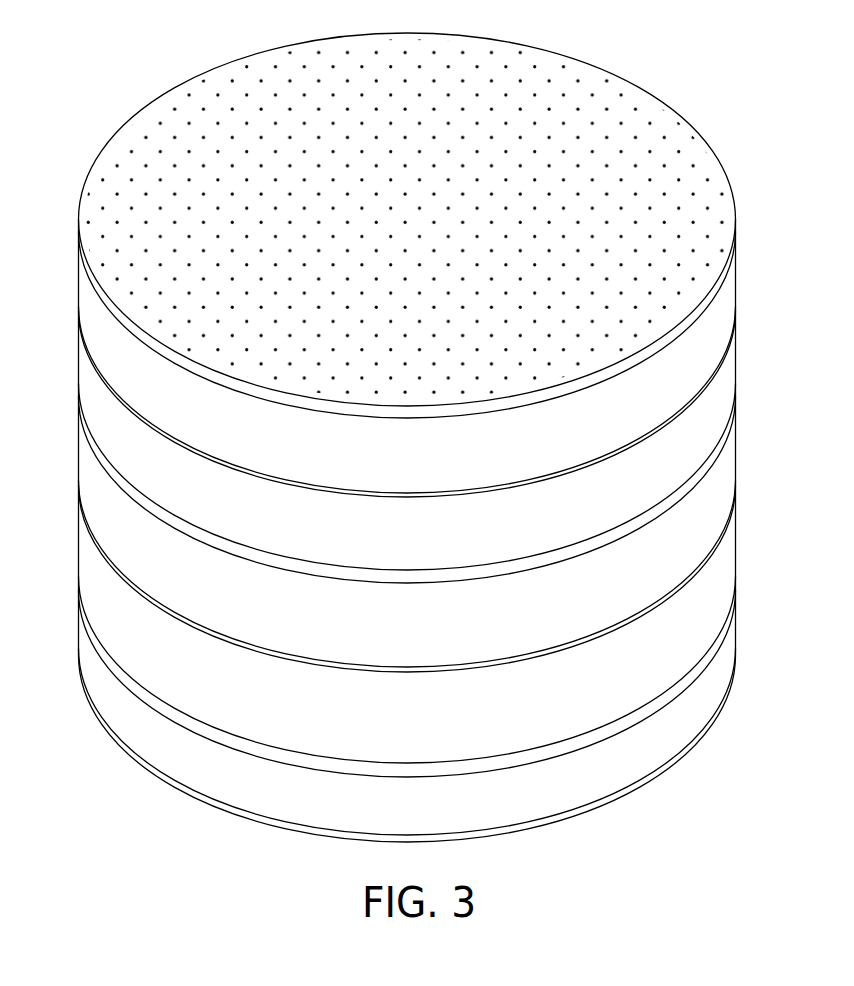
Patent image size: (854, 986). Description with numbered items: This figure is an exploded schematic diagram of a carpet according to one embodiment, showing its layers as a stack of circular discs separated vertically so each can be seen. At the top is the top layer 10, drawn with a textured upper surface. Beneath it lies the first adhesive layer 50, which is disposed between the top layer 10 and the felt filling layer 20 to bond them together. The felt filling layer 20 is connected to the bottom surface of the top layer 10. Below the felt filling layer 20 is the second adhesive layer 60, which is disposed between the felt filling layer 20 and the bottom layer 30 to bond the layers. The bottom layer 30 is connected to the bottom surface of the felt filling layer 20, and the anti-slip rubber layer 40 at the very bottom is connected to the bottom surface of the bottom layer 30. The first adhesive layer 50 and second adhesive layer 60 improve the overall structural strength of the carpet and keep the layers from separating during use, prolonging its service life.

The top layer 10 is at (457, 207).
The first adhesive layer 50 is at (327, 432).
The felt filling layer 20 is at (647, 482).
The second adhesive layer 60 is at (290, 615).
The bottom layer 30 is at (232, 732).
The anti-slip rubber layer 40 is at (622, 798).